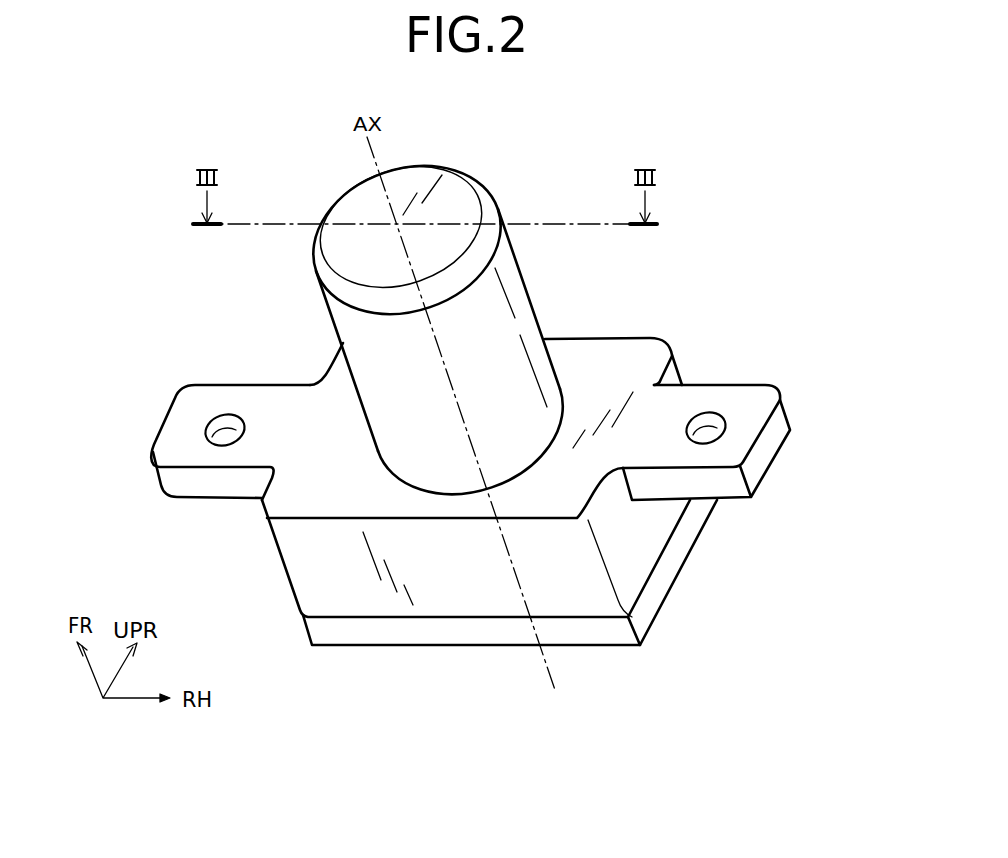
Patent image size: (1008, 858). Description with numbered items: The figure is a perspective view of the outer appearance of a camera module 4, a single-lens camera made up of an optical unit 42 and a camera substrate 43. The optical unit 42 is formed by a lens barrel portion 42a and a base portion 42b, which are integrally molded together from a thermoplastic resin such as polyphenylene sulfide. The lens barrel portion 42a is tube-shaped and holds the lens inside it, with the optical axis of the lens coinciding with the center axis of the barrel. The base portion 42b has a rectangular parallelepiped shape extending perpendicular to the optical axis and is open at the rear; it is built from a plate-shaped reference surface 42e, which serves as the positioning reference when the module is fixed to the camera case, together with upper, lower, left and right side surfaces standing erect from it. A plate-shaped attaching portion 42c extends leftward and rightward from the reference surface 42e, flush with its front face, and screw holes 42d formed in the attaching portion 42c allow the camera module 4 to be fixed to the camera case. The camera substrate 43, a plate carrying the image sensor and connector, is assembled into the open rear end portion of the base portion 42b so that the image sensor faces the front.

The camera module 4 is at (549, 125).
The optical unit 42 is at (700, 254).
The lens barrel portion 42a is at (527, 297).
The base portion 42b is at (600, 340).
The attaching portion 42c is at (192, 452).
The screw holes 42d is at (237, 420).
The reference surface 42e is at (315, 492).
The camera substrate 43 is at (650, 597).